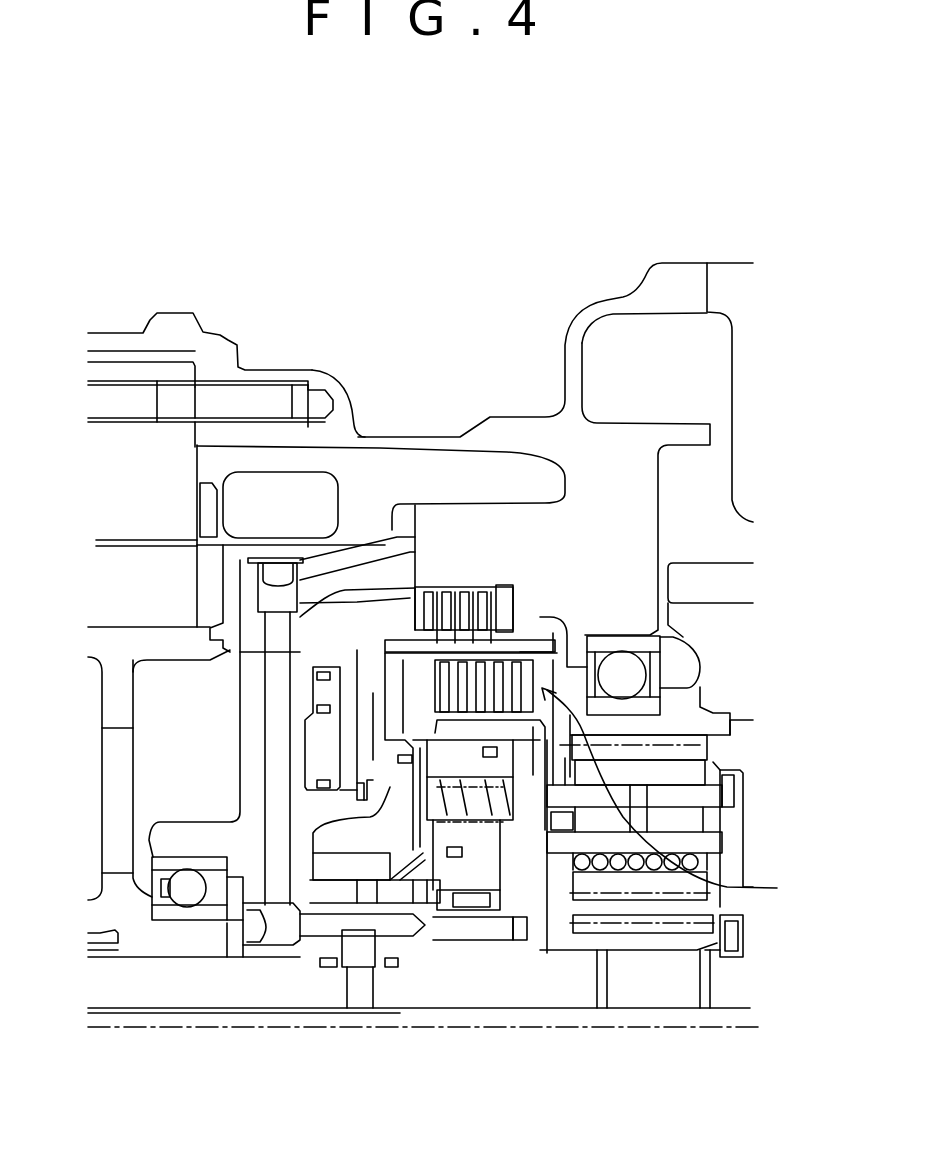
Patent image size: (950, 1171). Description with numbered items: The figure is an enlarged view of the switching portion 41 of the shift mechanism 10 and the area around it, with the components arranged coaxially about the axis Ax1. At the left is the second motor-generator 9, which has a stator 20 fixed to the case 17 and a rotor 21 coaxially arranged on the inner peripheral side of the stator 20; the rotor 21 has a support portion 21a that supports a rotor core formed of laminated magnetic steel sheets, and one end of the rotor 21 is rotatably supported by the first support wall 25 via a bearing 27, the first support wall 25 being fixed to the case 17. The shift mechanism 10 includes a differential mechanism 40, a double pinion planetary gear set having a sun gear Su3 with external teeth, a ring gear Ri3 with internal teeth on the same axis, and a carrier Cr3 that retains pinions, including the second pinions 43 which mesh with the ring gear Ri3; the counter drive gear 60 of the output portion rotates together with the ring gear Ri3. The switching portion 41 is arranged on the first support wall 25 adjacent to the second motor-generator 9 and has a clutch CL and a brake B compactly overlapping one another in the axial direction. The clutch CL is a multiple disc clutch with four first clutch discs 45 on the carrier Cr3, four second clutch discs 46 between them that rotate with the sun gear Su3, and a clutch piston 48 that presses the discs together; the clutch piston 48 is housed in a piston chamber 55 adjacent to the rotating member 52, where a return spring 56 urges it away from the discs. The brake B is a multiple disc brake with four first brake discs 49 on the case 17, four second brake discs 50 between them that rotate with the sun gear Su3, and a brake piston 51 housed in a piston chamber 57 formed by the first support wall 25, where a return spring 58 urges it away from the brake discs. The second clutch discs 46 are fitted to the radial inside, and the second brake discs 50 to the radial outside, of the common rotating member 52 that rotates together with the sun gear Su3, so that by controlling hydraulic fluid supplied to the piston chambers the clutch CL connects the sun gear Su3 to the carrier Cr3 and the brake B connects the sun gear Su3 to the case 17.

The second motor-generator 9 is at (122, 336).
The stator 20 is at (145, 445).
The rotor 21 is at (162, 570).
The brake piston 51 is at (360, 630).
The case 17 is at (377, 437).
The switching portion 41 is at (428, 512).
The shift mechanism 10 is at (542, 528).
The brake B is at (403, 576).
The first brake discs 49 is at (487, 583).
The second brake discs 50 is at (497, 600).
The second clutch discs 46 is at (493, 673).
The first clutch discs 45 is at (503, 688).
The ring gear Ri3 is at (633, 735).
The differential mechanism 40 is at (682, 638).
The counter drive gear 60 is at (753, 523).
The second pinions 43 is at (690, 737).
The piston chamber 57 is at (307, 638).
The first support wall 25 is at (247, 706).
The support portion 21a is at (120, 719).
The return spring 58 is at (323, 720).
The clutch CL is at (680, 797).
The bearing 27 is at (205, 913).
The rotating member 52 is at (393, 738).
The clutch piston 48 is at (407, 740).
The piston chamber 55 is at (427, 727).
The return spring 56 is at (473, 777).
The carrier Cr3 is at (557, 890).
The sun gear Su3 is at (657, 943).
The first axis Ax1 is at (424, 1028).